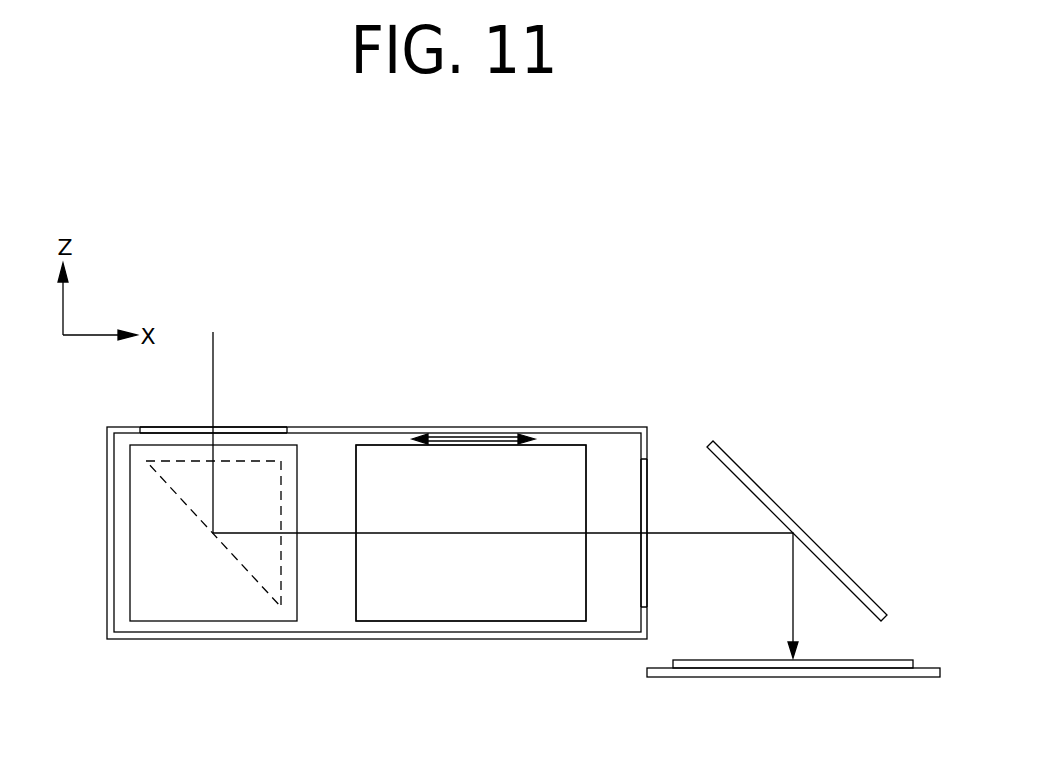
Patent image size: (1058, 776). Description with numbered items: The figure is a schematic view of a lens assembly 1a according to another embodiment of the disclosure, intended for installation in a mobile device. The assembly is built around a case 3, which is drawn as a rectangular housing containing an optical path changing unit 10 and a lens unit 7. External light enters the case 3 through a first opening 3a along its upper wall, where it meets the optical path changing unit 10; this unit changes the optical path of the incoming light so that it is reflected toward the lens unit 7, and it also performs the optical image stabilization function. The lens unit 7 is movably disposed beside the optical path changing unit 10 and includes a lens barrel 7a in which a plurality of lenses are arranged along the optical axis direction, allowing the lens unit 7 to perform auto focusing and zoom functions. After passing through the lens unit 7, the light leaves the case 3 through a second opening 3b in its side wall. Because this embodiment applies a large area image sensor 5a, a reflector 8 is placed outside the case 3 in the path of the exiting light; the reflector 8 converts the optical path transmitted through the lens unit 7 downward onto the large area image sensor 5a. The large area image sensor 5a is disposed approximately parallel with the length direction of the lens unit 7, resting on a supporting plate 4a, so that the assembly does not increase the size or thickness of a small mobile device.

The lens assembly 1a is at (475, 190).
The case 3 is at (572, 427).
The first opening 3a is at (263, 427).
The second opening 3b is at (645, 580).
The optical path changing unit 10 is at (216, 627).
The lens unit 7 is at (470, 627).
The lens barrel 7a is at (396, 610).
The reflector 8 is at (818, 538).
The large area image sensor 5a is at (698, 667).
The display panel 4a is at (897, 677).